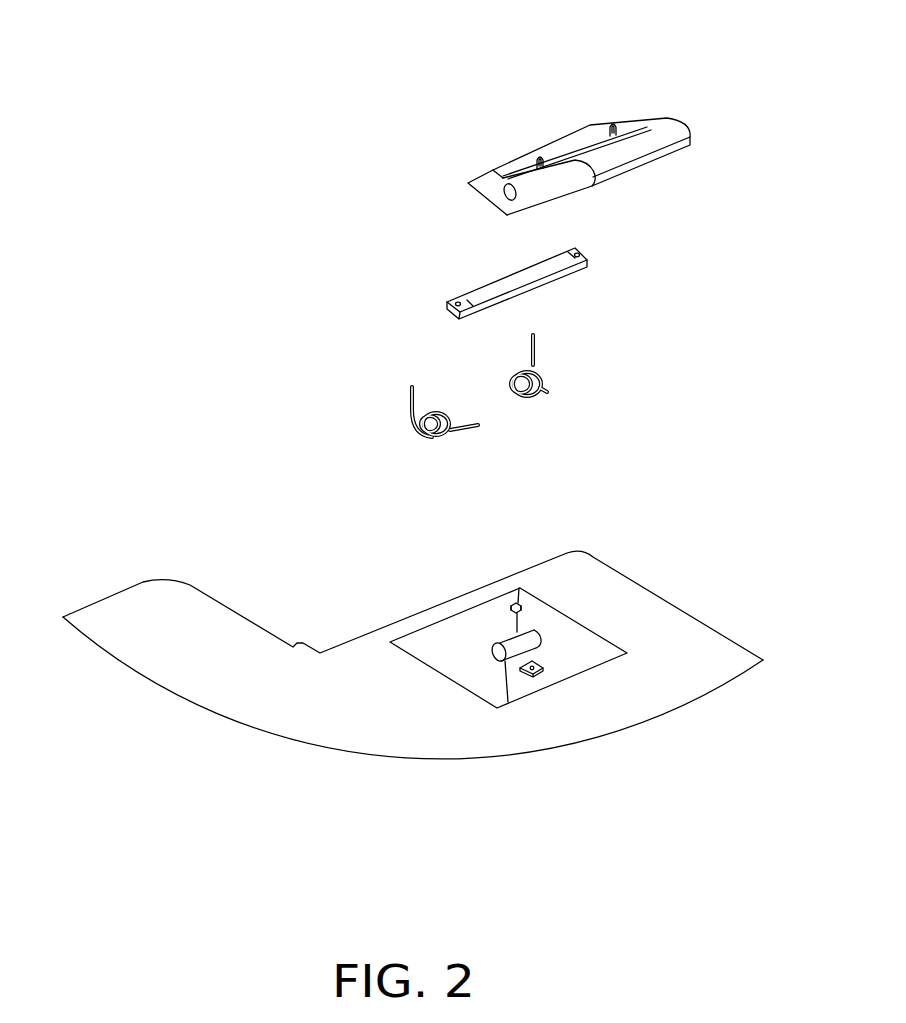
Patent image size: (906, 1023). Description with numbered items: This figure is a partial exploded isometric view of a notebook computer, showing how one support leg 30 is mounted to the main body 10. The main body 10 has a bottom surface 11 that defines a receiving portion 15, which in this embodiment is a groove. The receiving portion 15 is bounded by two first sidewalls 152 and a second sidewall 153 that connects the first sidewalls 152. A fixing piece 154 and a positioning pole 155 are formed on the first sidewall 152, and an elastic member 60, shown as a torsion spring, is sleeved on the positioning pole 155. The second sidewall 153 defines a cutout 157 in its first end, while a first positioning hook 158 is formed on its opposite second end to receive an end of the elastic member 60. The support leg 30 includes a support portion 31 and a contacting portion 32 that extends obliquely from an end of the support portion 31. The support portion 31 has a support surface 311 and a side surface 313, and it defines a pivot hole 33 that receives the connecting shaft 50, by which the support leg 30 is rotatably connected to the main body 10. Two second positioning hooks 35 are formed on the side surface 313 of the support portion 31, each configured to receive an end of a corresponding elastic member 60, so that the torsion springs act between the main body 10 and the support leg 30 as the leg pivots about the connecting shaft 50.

The main body 10 is at (147, 547).
The bottom surface 11 is at (220, 660).
The receiving portion 15 is at (583, 647).
The first sidewall 152 is at (550, 640).
The second sidewall 153 is at (441, 637).
The fixing piece 154 is at (537, 673).
The positioning pole 155 is at (552, 640).
The cutout 157 is at (480, 680).
The first positioning hook 158 is at (518, 588).
The support leg 30 is at (673, 168).
The support portion 31 is at (558, 177).
The support surface 311 is at (660, 133).
The side surface 313 is at (577, 150).
The contacting portion 32 is at (483, 187).
The pivot hole 33 is at (508, 200).
The second positioning hook 35 is at (612, 127).
The connecting shaft 50 is at (548, 268).
The elastic member 60 is at (548, 385).